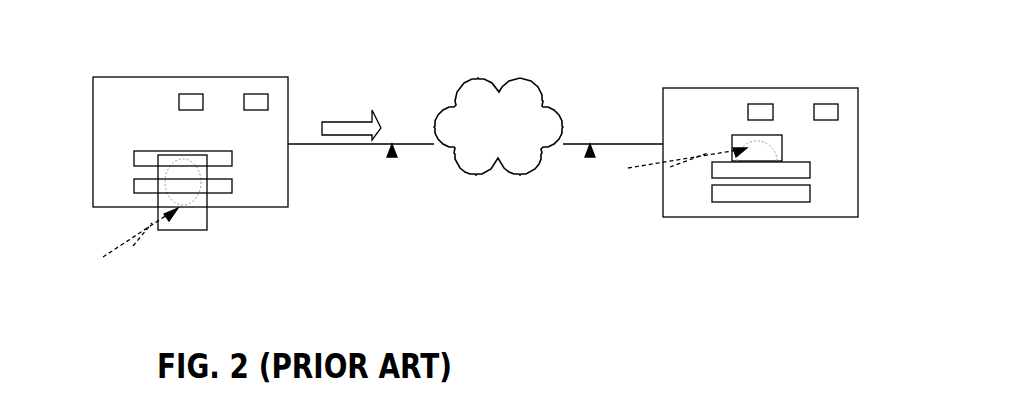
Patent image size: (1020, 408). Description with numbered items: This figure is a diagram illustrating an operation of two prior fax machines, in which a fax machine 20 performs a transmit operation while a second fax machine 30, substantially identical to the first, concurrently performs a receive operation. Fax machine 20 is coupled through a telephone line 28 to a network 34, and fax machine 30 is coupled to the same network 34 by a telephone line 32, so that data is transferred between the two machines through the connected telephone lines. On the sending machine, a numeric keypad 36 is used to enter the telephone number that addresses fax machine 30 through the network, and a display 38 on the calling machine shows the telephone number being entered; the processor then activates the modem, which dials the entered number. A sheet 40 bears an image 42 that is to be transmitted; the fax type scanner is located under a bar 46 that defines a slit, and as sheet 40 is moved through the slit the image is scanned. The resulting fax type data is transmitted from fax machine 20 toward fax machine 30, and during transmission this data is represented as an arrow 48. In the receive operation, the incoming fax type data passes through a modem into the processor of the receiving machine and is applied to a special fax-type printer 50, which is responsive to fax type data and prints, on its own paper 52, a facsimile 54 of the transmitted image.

The fax machine 20 is at (99, 77).
The second fax machine 30 is at (672, 88).
The numeric keypad 36 is at (192, 94).
The display 38 is at (257, 94).
The sheet 40 is at (199, 232).
The image 42 is at (135, 247).
The bar 46 is at (220, 195).
The fax-type printer 50 is at (135, 158).
The arrow 48 is at (343, 118).
The telephone line 28 is at (390, 157).
The network 34 is at (480, 77).
The telephone line 32 is at (588, 157).
The paper 52 is at (783, 146).
The facsimile 54 is at (679, 171).